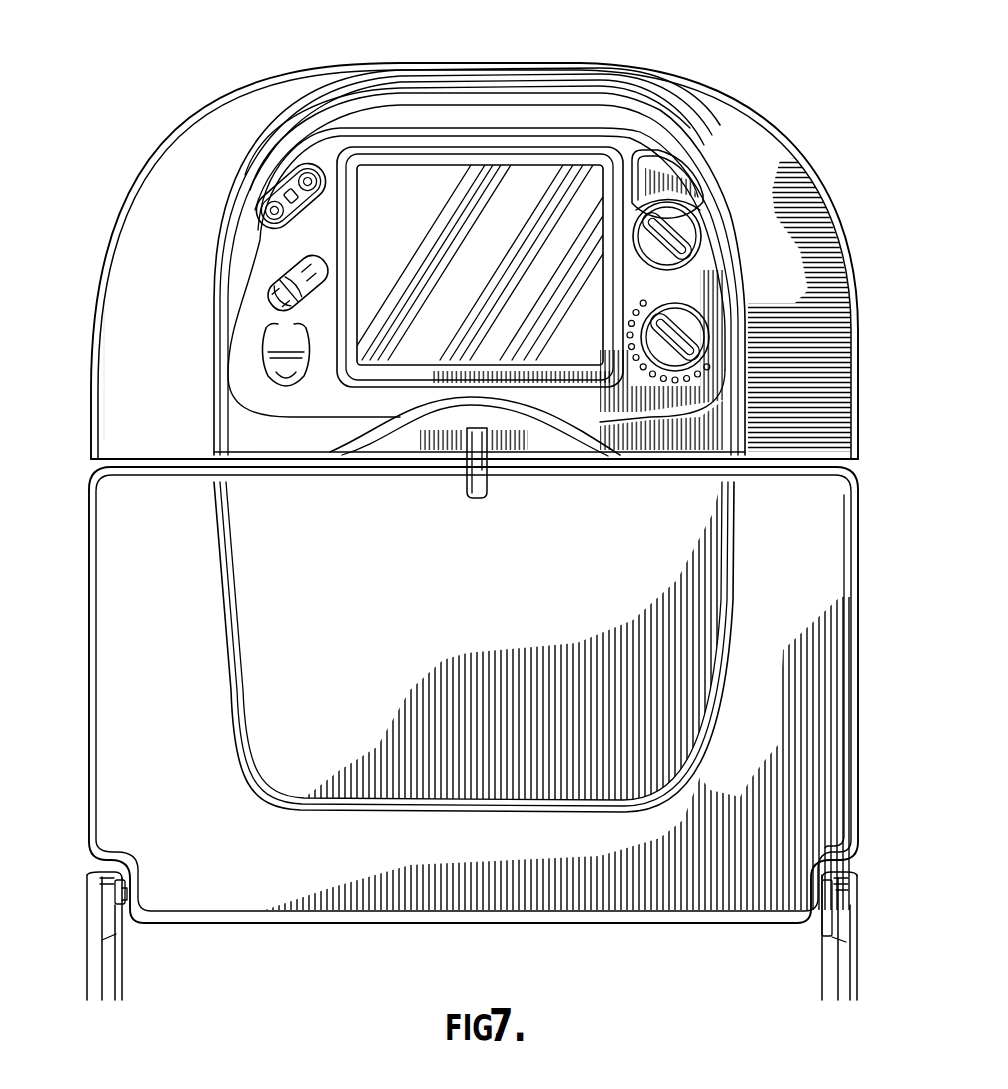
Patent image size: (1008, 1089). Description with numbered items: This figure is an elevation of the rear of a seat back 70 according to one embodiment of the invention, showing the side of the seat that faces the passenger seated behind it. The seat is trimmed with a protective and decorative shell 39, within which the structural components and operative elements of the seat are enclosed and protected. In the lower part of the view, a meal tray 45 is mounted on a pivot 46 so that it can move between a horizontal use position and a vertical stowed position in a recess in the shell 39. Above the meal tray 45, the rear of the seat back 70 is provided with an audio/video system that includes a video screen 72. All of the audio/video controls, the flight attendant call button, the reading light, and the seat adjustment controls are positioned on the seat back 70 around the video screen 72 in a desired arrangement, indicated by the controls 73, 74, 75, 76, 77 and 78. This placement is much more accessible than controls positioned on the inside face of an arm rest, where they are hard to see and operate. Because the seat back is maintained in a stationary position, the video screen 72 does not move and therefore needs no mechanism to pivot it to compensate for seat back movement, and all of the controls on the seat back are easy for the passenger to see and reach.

The seat back 70 is at (98, 162).
The shell 39 is at (148, 418).
The video screen 72 is at (581, 184).
The control 73 is at (693, 318).
The control 74 is at (690, 236).
The control 75 is at (654, 165).
The control 76 is at (281, 185).
The control 77 is at (298, 262).
The control 78 is at (280, 380).
The meal tray 45 is at (142, 760).
The pivot 46 is at (122, 898).